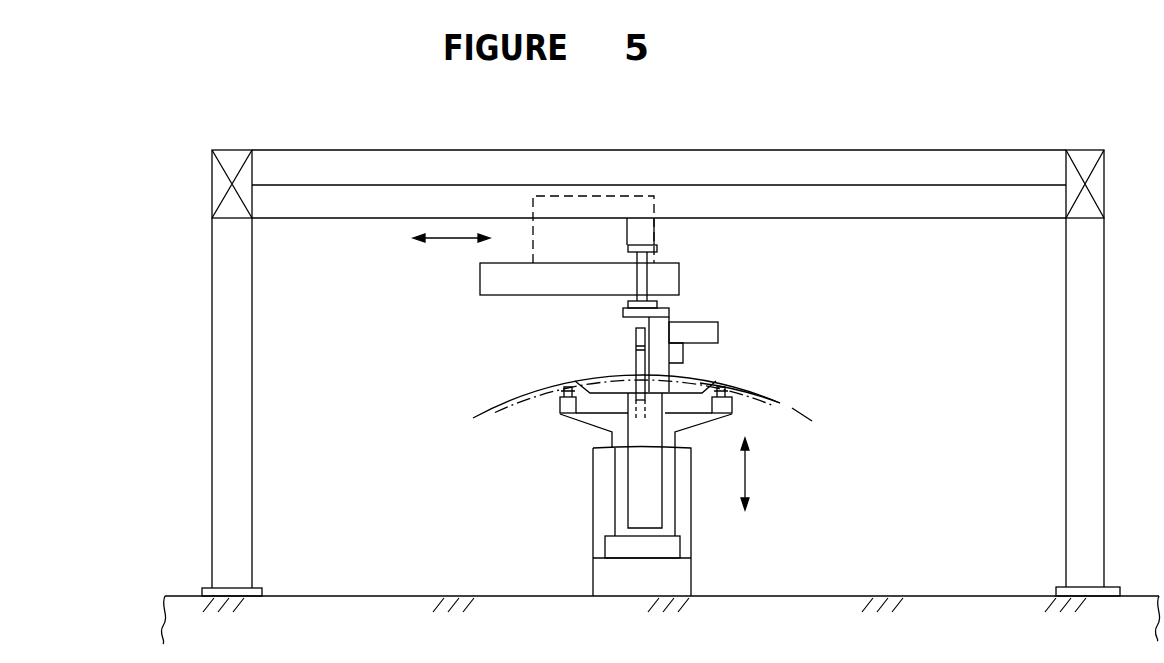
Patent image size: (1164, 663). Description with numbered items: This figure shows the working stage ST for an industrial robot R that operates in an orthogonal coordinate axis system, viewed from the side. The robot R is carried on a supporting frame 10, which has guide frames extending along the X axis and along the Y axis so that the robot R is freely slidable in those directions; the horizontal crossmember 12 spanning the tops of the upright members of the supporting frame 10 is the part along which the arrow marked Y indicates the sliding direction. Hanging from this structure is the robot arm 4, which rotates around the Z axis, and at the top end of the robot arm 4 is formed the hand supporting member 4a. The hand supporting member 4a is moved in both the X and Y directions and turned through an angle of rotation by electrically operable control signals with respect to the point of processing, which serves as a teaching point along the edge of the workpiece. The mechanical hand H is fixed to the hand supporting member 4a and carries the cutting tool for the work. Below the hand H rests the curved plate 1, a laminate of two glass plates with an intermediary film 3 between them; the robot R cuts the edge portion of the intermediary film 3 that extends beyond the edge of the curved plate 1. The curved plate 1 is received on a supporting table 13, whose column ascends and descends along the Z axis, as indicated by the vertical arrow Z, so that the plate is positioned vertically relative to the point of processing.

The curved plate 1 is at (733, 384).
The intermediary film 3 is at (792, 408).
The robot arm 4 is at (656, 302).
The hand supporting member 4a is at (660, 311).
The supporting frame 10 is at (215, 358).
The cross beam / girder 12 is at (342, 203).
The supporting table 13 is at (585, 448).
The industrial robot R is at (686, 276).
The mechanical hand H is at (626, 349).
The working stage ST is at (312, 497).
The Y axis Y is at (451, 255).
The Z axis Z is at (755, 474).